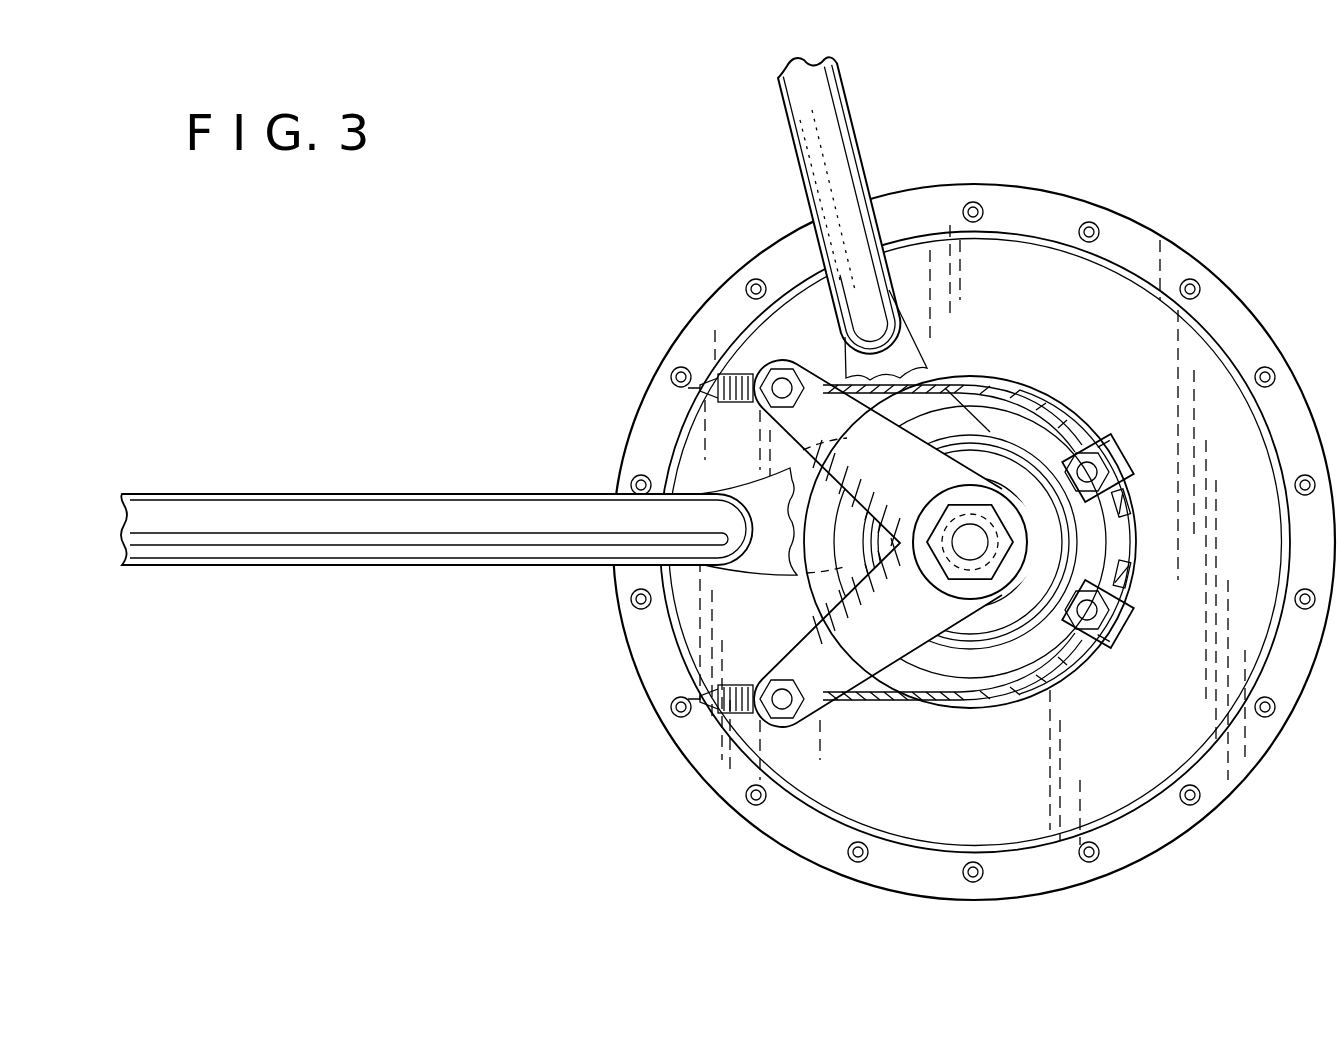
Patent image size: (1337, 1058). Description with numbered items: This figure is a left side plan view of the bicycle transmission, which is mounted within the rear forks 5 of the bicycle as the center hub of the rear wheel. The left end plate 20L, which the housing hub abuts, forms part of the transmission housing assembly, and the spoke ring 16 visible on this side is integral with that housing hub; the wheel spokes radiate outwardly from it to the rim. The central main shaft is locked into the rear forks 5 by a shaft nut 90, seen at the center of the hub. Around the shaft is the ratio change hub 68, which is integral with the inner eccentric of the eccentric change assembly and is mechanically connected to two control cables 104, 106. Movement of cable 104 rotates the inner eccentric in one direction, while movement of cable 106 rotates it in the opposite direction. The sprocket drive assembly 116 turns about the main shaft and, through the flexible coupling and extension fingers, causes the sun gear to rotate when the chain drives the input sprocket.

The rear forks 5 is at (545, 492).
The spoke rings 16 is at (1042, 191).
The end plate 20L is at (974, 542).
The ratio change hub 68 is at (1137, 538).
The shaft nut 90 is at (1020, 568).
The control cable 104 is at (1000, 388).
The control cable 106 is at (877, 707).
The sprocket drive assembly 116 is at (712, 601).